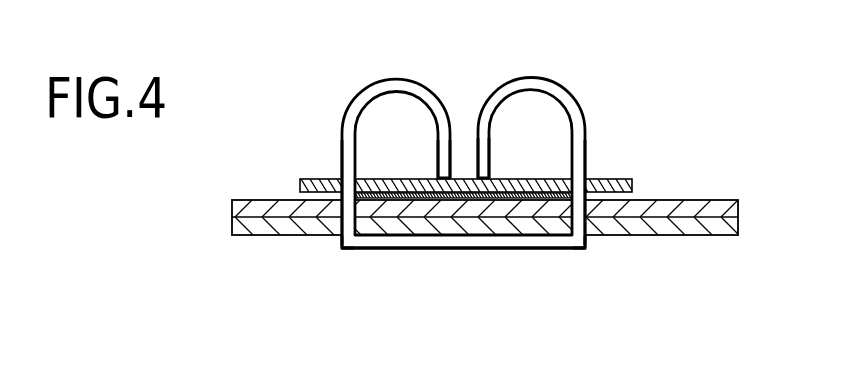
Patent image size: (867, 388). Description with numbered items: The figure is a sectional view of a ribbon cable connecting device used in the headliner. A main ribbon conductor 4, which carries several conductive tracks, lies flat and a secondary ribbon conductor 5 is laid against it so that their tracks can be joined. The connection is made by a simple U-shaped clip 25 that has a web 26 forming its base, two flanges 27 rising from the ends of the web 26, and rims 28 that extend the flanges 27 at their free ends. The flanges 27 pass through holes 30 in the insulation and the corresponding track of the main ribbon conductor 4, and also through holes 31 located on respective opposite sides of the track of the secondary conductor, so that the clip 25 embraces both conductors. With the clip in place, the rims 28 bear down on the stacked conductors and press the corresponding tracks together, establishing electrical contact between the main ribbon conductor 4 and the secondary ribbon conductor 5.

The main ribbon conductor 4 is at (247, 236).
The secondary ribbon conductor 5 is at (633, 182).
The U-shaped clip 25 is at (542, 66).
The web 26 is at (458, 250).
The flanges 27 is at (343, 138).
The rims 28 is at (442, 142).
The holes 30 is at (337, 250).
The holes 31 is at (339, 178).